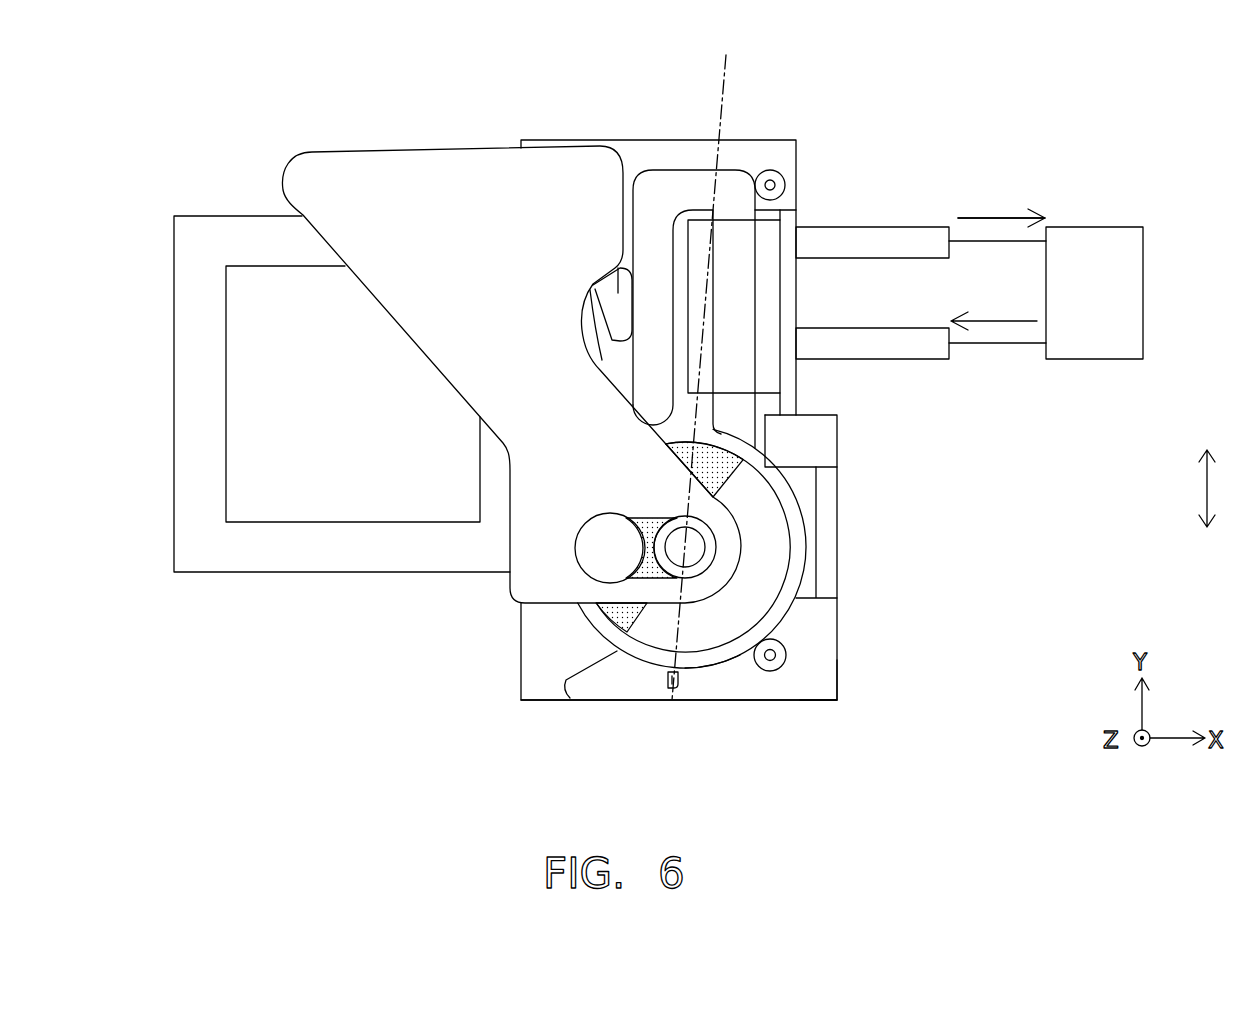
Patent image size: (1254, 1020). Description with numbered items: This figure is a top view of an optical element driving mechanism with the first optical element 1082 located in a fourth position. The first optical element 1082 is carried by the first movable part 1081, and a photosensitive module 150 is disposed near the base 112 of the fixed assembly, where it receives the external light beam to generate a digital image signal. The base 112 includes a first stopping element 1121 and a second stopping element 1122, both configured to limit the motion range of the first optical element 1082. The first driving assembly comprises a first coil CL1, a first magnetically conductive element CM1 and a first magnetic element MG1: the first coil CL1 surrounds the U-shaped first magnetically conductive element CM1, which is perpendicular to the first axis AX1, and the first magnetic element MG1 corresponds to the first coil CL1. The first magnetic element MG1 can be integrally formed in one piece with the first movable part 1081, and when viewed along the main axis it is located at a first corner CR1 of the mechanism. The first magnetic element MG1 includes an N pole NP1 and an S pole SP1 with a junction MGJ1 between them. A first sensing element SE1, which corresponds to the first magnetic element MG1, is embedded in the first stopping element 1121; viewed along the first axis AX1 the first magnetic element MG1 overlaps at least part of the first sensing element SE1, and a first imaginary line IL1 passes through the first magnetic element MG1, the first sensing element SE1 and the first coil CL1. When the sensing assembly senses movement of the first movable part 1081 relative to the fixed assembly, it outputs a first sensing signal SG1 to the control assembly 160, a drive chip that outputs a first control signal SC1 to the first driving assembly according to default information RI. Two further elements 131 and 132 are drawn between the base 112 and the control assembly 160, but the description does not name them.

The photosensitive module 150 is at (205, 392).
The first optical element 1082 is at (497, 362).
The first movable part 1081 is at (611, 547).
The N pole NP1 is at (598, 606).
The junction MGJ1 is at (617, 651).
The first stopping element 1121 is at (625, 678).
The second stopping element 1122 is at (618, 267).
The base 112 is at (787, 137).
The first magnetically conductive element CM1 is at (673, 187).
The first imaginary line IL1 is at (708, 366).
The first coil CL1 is at (768, 287).
The first conductive plate 131 is at (867, 240).
The second conductive plate 132 is at (867, 345).
The control assembly 160 is at (1118, 293).
The default information RI is at (1001, 194).
The first sensing signal SG1 is at (1001, 204).
The first control signal SC1 is at (994, 311).
The S pole SP1 is at (765, 547).
The first sensing element SE1 is at (670, 690).
The first magnetic element MG1 is at (707, 657).
The first corner CR1 is at (847, 708).
The first axis AX1 is at (1206, 474).